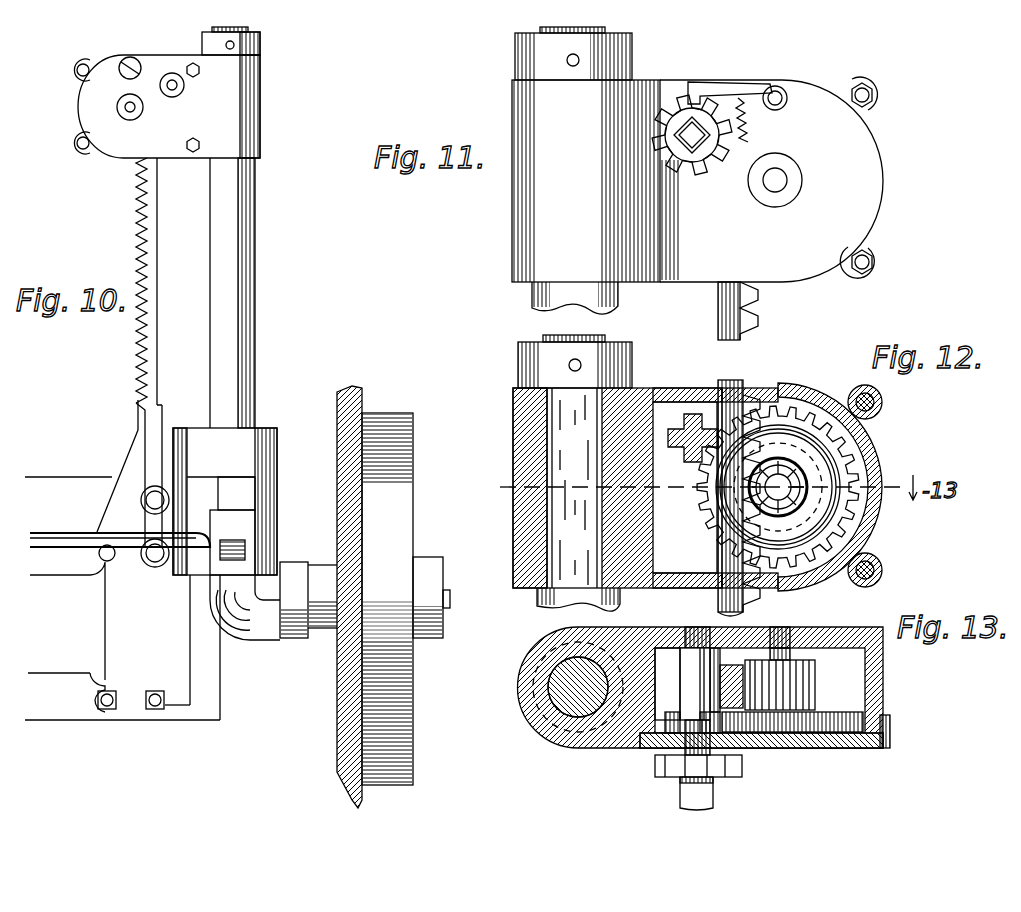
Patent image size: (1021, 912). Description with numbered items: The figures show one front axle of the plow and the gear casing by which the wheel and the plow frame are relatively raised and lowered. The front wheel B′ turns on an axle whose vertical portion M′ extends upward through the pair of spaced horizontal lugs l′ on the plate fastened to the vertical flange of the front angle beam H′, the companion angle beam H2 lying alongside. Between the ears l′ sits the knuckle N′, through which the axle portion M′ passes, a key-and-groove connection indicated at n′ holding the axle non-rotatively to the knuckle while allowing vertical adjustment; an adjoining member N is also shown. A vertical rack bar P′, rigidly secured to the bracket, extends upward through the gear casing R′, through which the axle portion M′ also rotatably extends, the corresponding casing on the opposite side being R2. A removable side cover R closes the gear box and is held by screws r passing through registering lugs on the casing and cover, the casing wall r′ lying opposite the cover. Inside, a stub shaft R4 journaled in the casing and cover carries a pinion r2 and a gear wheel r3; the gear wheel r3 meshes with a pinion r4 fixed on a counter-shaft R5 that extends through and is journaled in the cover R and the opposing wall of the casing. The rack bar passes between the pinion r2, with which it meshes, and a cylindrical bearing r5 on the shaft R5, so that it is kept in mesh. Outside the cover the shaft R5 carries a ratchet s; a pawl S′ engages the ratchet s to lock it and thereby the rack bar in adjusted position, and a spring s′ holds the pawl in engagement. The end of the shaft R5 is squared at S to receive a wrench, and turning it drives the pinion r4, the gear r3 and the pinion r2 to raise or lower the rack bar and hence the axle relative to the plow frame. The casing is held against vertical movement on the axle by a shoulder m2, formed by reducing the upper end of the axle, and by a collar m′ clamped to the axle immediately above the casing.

In FIG. 10, the gear casing R′ is at (250, 105).
In FIG. 11, the gear casing R′ is at (586, 181).
In FIG. 13, the gear casing R′ is at (884, 680).
In FIG. 10, the collar m′ is at (262, 45).
In FIG. 11, the collar m′ is at (622, 60).
In FIG. 10, the screws r is at (71, 71).
In FIG. 11, the screws r is at (874, 97).
In FIG. 12, the screws r is at (875, 402).
In FIG. 10, the rack bar P′ is at (158, 312).
In FIG. 11, the rack bar P′ is at (758, 318).
In FIG. 12, the rack bar P′ is at (750, 608).
In FIG. 13, the rack bar P′ is at (736, 662).
In FIG. 10, the axle M′ is at (256, 316).
In FIG. 11, the axle M′ is at (534, 300).
In FIG. 12, the axle M′ is at (560, 523).
In FIG. 13, the axle M′ is at (573, 720).
In FIG. 10, the horizontal lugs l′ is at (245, 435).
In FIG. 10, the knuckle N′ is at (262, 482).
In FIG. 10, the bracket block n′ is at (237, 520).
In FIG. 10, the lever N is at (58, 527).
In FIG. 10, the front angle beam H′ is at (60, 486).
In FIG. 10, the front angle beam H2 is at (68, 722).
In FIG. 10, the front wheel B′ is at (392, 412).
In FIG. 11, the squared end of shaft S is at (700, 143).
In FIG. 13, the squared end of shaft S is at (714, 796).
In FIG. 11, the pawl S′ is at (712, 85).
In FIG. 11, the spring s′ is at (752, 136).
In FIG. 11, the gear casing R2 is at (787, 180).
In FIG. 11, the side cover R is at (771, 181).
In FIG. 12, the side cover R is at (802, 487).
In FIG. 13, the side cover R is at (830, 748).
In FIG. 12, the housing wall r′ is at (525, 476).
In FIG. 13, the housing wall r′ is at (516, 700).
In FIG. 12, the shoulder m2 is at (542, 593).
In FIG. 13, the shoulder m2 is at (530, 730).
In FIG. 12, the pinion r4 is at (689, 451).
In FIG. 13, the pinion r4 is at (690, 708).
In FIG. 12, the gear wheel r3 is at (838, 522).
In FIG. 13, the gear wheel r3 is at (820, 722).
In FIG. 12, the stub shaft R4 is at (786, 572).
In FIG. 13, the stub shaft R4 is at (790, 630).
In FIG. 13, the counter-shaft R5 is at (697, 622).
In FIG. 13, the cylindrical bearing r5 is at (667, 690).
In FIG. 13, the ratchet s is at (742, 768).
In FIG. 13, the pinion r2 is at (810, 675).